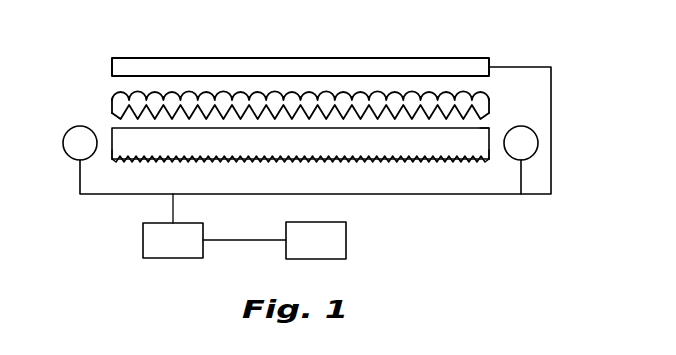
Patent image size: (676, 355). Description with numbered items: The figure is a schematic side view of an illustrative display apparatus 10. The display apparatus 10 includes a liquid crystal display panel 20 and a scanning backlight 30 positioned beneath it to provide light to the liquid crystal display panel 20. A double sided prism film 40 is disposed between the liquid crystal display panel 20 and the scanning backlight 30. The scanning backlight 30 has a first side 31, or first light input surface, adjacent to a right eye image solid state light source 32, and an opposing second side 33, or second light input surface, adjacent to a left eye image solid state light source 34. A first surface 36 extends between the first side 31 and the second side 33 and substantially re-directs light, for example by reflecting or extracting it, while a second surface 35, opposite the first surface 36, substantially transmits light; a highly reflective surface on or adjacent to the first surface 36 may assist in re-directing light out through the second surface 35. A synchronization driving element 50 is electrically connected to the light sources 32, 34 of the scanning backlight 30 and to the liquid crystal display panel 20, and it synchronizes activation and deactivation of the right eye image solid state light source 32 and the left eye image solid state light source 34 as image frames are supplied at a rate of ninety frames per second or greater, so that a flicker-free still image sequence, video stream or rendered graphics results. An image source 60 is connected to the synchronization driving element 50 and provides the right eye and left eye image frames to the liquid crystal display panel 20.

The display apparatus 10 is at (415, 43).
The liquid crystal display panel 20 is at (122, 62).
The scanning backlight 30 is at (285, 141).
The first side 31 is at (489, 155).
The right eye image solid state light source 32 is at (527, 139).
The second side 33 is at (110, 158).
The left eye image solid state light source 34 is at (75, 142).
The second surface 35 is at (482, 125).
The first surface 36 is at (346, 163).
The double sided prism film 40 is at (118, 99).
The synchronization driving element 50 is at (150, 241).
The image source 60 is at (338, 242).